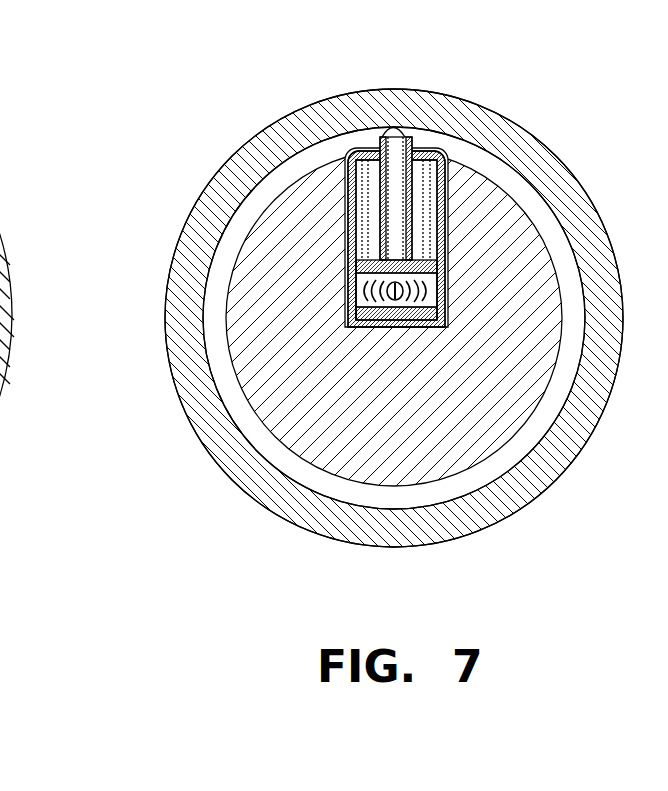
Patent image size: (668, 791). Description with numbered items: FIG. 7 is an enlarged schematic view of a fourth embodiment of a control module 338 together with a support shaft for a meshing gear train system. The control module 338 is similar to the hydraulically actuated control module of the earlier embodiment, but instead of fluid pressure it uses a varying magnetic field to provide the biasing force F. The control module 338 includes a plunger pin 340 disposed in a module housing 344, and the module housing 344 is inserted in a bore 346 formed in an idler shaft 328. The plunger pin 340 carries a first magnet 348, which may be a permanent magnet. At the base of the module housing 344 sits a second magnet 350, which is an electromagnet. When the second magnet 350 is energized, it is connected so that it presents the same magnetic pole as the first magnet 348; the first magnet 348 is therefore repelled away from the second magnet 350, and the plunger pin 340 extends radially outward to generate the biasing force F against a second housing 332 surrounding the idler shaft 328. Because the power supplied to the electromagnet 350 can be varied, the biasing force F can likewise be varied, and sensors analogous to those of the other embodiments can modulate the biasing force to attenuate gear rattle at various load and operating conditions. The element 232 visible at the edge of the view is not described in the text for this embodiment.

The adjacent component 232 is at (0, 512).
The idler shaft 328 is at (311, 445).
The second housing 332 is at (193, 393).
The control module 338 is at (347, 152).
The plunger pin 340 is at (391, 126).
The module housing 344 is at (413, 148).
The bore 346 is at (447, 150).
The first magnet 348 is at (382, 270).
The second magnet 350 is at (397, 325).